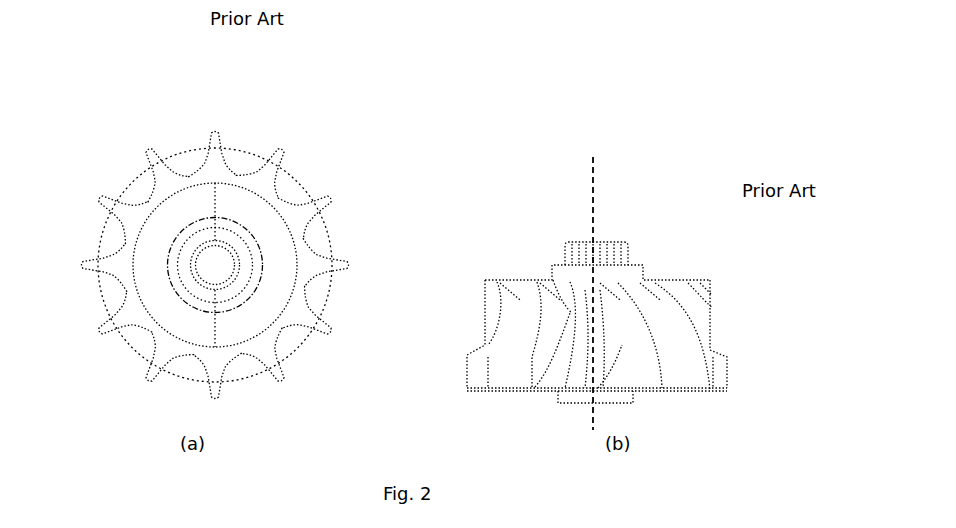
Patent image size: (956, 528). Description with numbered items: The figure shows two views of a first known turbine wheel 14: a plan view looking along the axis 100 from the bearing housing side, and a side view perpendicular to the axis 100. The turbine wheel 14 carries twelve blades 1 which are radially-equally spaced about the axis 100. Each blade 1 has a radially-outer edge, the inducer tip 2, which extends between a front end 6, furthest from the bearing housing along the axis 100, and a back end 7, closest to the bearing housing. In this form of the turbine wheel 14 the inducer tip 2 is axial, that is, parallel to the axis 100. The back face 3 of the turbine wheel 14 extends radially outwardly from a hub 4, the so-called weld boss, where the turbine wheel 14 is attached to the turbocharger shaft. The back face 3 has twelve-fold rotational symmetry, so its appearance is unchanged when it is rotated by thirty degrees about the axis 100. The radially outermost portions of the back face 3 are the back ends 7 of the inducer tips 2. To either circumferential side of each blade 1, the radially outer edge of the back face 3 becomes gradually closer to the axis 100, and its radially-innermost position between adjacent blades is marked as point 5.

The blade 1 is at (328, 267).
The inducer tip 2 is at (347, 267).
The back face 3 is at (245, 207).
The hub 4 is at (212, 245).
The point 5 is at (193, 168).
The front end 6 is at (725, 353).
The back end 7 is at (220, 137).
The turbine wheel 14 is at (336, 135).
The axis 100 is at (595, 182).